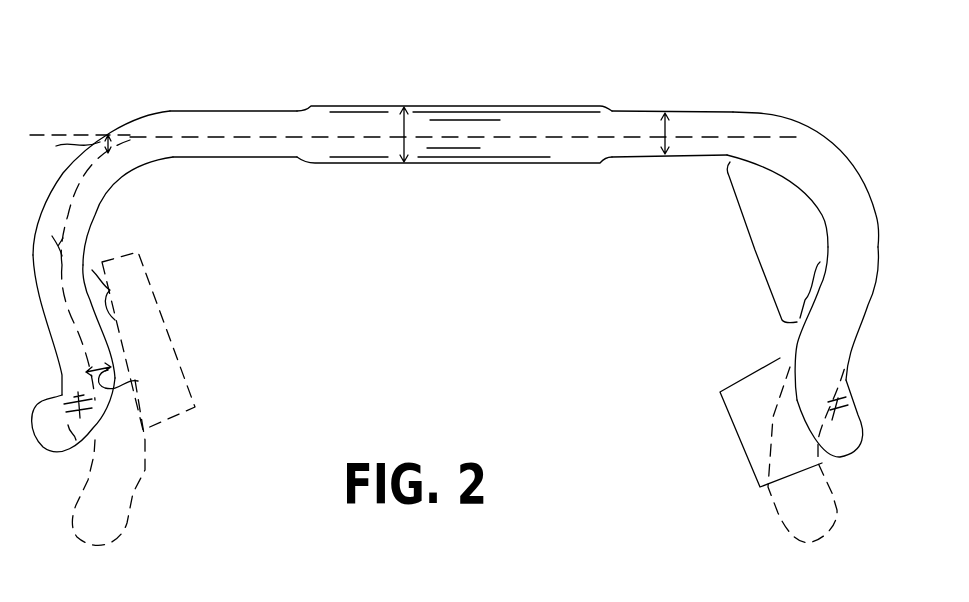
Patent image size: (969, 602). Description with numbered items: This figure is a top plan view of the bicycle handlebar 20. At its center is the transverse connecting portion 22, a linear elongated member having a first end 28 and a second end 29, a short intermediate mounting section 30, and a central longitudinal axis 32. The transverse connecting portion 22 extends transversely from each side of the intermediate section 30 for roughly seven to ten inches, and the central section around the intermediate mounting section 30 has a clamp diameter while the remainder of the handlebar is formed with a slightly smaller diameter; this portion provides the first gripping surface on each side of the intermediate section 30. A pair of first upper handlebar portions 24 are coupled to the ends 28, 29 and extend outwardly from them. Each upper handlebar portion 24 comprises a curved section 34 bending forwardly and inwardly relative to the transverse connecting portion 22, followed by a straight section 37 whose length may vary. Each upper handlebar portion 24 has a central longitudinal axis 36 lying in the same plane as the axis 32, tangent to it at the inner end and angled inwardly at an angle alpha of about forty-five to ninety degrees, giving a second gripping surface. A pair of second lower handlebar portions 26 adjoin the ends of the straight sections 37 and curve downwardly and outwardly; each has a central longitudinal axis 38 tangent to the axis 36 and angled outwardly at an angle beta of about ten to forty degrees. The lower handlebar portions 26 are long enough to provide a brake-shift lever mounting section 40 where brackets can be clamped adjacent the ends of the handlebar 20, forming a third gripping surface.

The handlebar 20 is at (339, 235).
The transverse connecting portion 22 is at (180, 95).
The first upper handlebar portions 24 is at (755, 250).
The second lower handlebar portions 26 is at (742, 451).
The first end 28 is at (172, 108).
The second end 29 is at (728, 110).
The intermediate mounting section 30 is at (457, 143).
The central longitudinal axis 32 is at (243, 157).
The curved section 34 is at (108, 132).
The central longitudinal axis 36 is at (43, 230).
The straight section 37 is at (812, 286).
The central longitudinal axis 38 is at (64, 499).
The brake-shift lever mounting section 40 is at (847, 390).